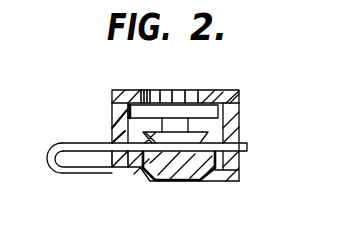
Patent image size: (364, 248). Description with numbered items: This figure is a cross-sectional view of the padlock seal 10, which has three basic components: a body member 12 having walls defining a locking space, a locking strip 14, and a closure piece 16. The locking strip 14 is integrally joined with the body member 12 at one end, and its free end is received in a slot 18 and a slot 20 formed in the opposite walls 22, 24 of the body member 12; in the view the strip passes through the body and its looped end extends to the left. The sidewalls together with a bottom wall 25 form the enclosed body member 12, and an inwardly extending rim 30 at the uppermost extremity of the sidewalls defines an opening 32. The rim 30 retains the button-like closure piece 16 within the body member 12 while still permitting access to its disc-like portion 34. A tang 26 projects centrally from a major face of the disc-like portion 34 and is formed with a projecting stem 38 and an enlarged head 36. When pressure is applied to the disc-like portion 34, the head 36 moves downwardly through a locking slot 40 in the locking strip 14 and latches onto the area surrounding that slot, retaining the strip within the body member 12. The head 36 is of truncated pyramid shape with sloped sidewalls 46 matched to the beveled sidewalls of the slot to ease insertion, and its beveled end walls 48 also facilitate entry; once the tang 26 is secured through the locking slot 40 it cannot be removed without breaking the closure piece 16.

The padlock seal 10 is at (239, 90).
The body member 12 is at (239, 183).
The locking strip 14 is at (63, 177).
The closure piece 16 is at (127, 112).
The slot 18 is at (111, 142).
The slot 20 is at (240, 143).
The wall 22 is at (112, 97).
The wall 24 is at (239, 107).
The bottom wall 25 is at (180, 179).
The tang 26 is at (173, 157).
The rim 30 is at (128, 91).
The opening 32 is at (203, 91).
The disc-like portion 34 is at (149, 92).
The enlarged head 36 is at (153, 149).
The stem 38 is at (182, 124).
The locking slot 40 is at (193, 147).
The sidewalls of head portion 46 is at (140, 156).
The cup member 48 is at (207, 134).